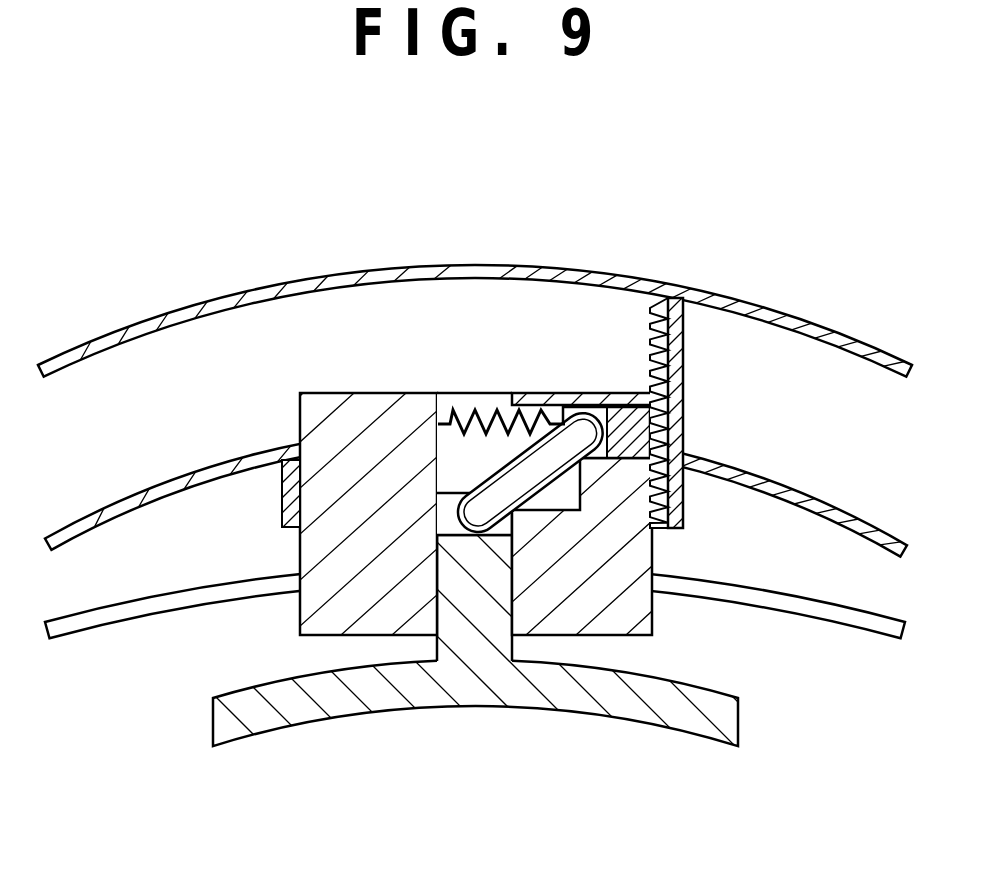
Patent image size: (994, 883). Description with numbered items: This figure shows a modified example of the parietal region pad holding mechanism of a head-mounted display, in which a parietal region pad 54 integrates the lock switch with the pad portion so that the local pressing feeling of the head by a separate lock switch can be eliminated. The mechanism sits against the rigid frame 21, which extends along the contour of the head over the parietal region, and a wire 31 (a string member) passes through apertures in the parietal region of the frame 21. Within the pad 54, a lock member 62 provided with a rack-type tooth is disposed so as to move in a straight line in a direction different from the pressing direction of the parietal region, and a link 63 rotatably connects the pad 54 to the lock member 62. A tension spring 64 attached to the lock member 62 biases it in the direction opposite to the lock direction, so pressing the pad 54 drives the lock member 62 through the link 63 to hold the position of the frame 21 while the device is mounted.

The frame 21 is at (138, 327).
The wire 31 is at (133, 612).
The parietal region pad 54 is at (328, 703).
The lock member 62 is at (622, 398).
The link 63 is at (498, 477).
The tension spring 64 is at (453, 410).